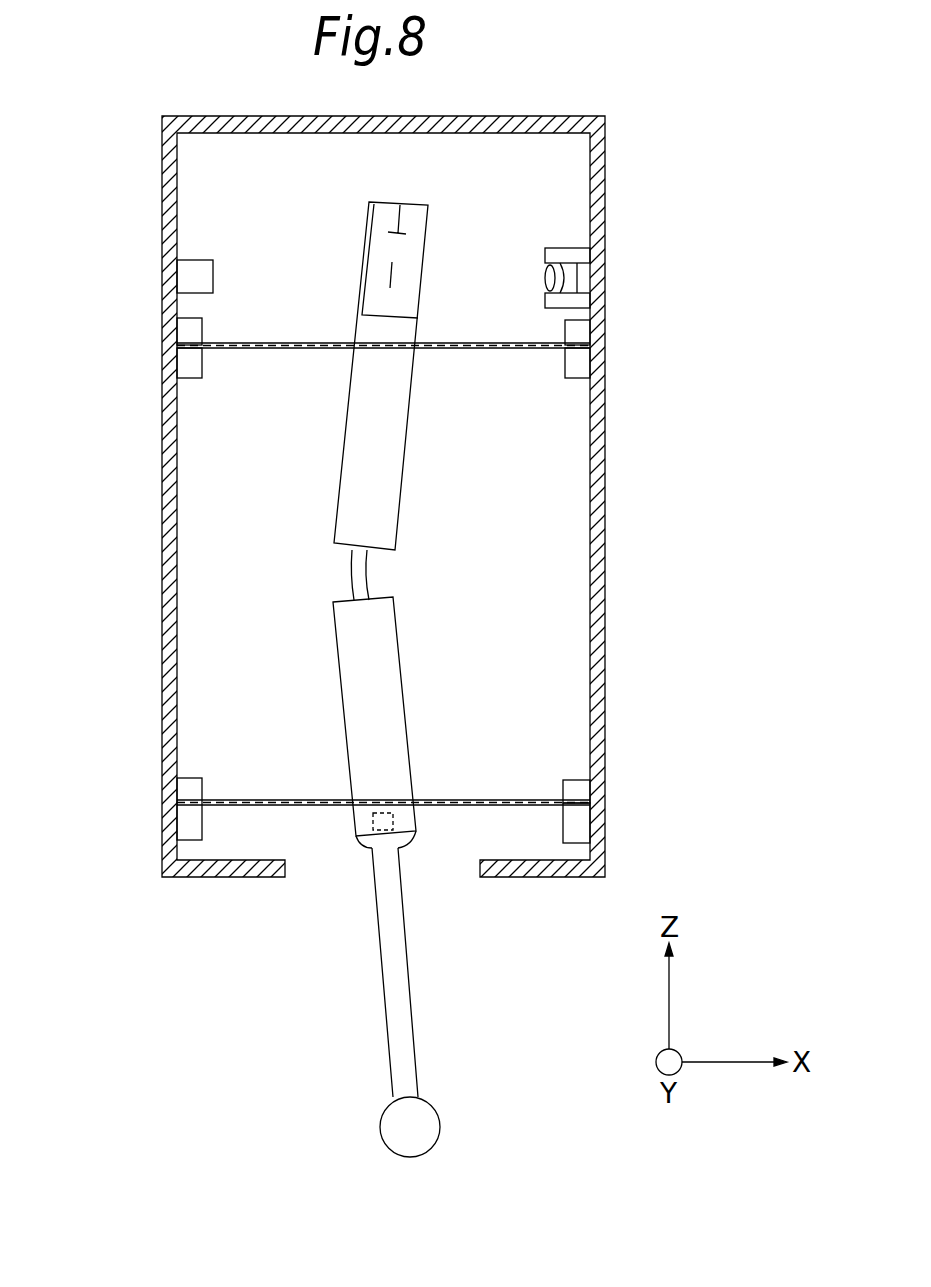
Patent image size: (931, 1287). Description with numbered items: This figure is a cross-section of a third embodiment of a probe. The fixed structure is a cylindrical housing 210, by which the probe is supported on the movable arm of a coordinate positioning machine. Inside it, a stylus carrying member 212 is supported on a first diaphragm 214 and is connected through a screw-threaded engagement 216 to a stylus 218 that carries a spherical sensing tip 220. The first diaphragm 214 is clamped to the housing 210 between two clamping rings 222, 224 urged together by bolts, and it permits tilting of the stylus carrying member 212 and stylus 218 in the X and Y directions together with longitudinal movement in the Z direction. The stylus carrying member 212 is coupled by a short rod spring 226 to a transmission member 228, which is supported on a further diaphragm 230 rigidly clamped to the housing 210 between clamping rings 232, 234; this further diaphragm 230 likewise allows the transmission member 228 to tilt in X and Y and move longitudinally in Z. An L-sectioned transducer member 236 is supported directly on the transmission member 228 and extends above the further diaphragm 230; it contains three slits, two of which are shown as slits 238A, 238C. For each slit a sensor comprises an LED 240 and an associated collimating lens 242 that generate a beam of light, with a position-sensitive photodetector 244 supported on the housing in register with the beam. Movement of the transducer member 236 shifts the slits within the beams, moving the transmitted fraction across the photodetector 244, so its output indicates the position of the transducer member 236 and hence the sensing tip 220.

The cylindrical housing 210 is at (607, 651).
The stylus carrying member 212 is at (403, 704).
The first diaphragm 214 is at (252, 798).
The screw-threaded engagement 216 is at (396, 820).
The stylus 218 is at (410, 990).
The spherical sensing tip 220 is at (432, 1124).
The clamping ring 222 is at (582, 826).
The clamping ring 224 is at (582, 792).
The short rod spring 226 is at (372, 572).
The transmission member 228 is at (352, 445).
The further diaphragm 230 is at (512, 350).
The clamping ring 232 is at (183, 330).
The clamping ring 234 is at (183, 363).
The transducer member 236 is at (430, 207).
The slit 238A is at (388, 272).
The slit 238C is at (398, 205).
The LED 240 is at (582, 280).
The collimating lens 242 is at (545, 279).
The position-sensitive photodetector 244 is at (212, 273).